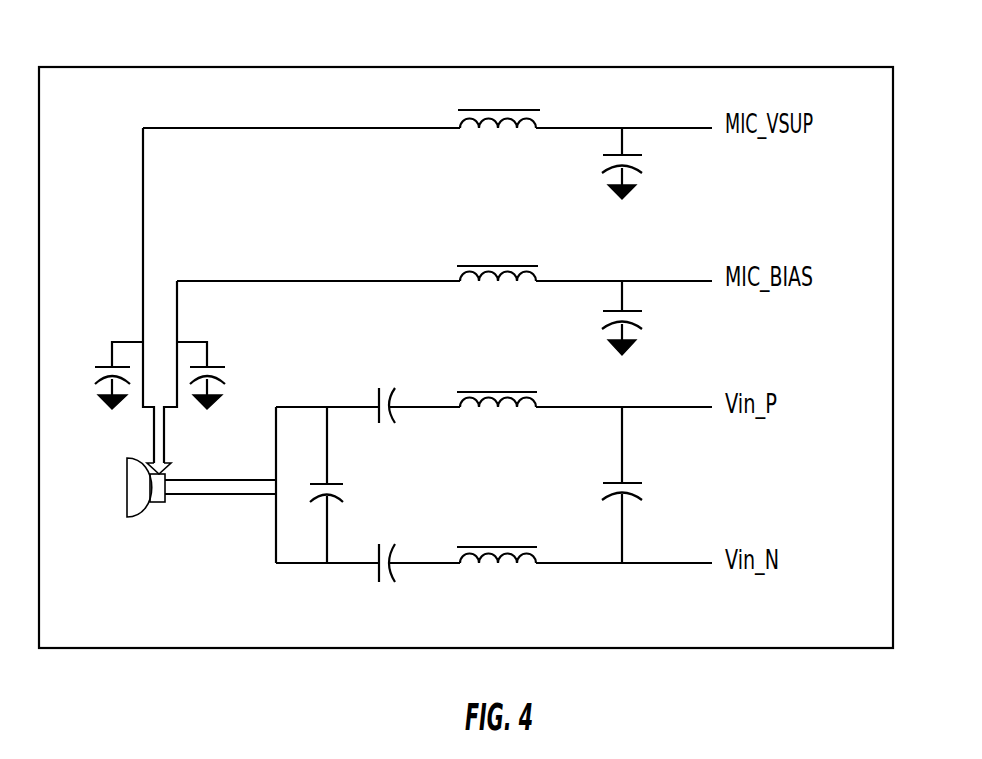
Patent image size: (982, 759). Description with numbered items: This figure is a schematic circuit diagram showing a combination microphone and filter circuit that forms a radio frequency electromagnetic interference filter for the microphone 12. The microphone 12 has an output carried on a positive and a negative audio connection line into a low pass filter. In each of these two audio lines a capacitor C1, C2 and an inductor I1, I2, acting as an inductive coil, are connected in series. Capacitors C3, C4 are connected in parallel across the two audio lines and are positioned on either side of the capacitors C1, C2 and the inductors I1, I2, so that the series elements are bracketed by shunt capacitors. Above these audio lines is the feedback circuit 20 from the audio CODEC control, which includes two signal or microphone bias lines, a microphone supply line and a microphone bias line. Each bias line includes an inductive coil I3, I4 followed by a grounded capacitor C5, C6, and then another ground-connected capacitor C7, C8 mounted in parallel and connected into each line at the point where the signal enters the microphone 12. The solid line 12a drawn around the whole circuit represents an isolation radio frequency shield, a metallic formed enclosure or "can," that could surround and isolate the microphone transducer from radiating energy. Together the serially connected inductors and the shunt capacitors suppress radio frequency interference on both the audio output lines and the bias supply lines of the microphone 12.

The solid line 12a is at (297, 67).
The feedback circuit 20 is at (260, 216).
The microphone 12 is at (150, 505).
The inductor I1 is at (513, 391).
The inductor I2 is at (503, 566).
The inductive coil I3 is at (507, 110).
The inductive coil I4 is at (495, 265).
The capacitor C1 is at (393, 415).
The capacitor C2 is at (373, 567).
The capacitor C3 is at (342, 493).
The capacitor C4 is at (637, 491).
The grounded capacitor C5 is at (638, 165).
The grounded capacitor C6 is at (638, 320).
The ground connected capacitor C7 is at (105, 363).
The ground connected capacitor C8 is at (217, 372).